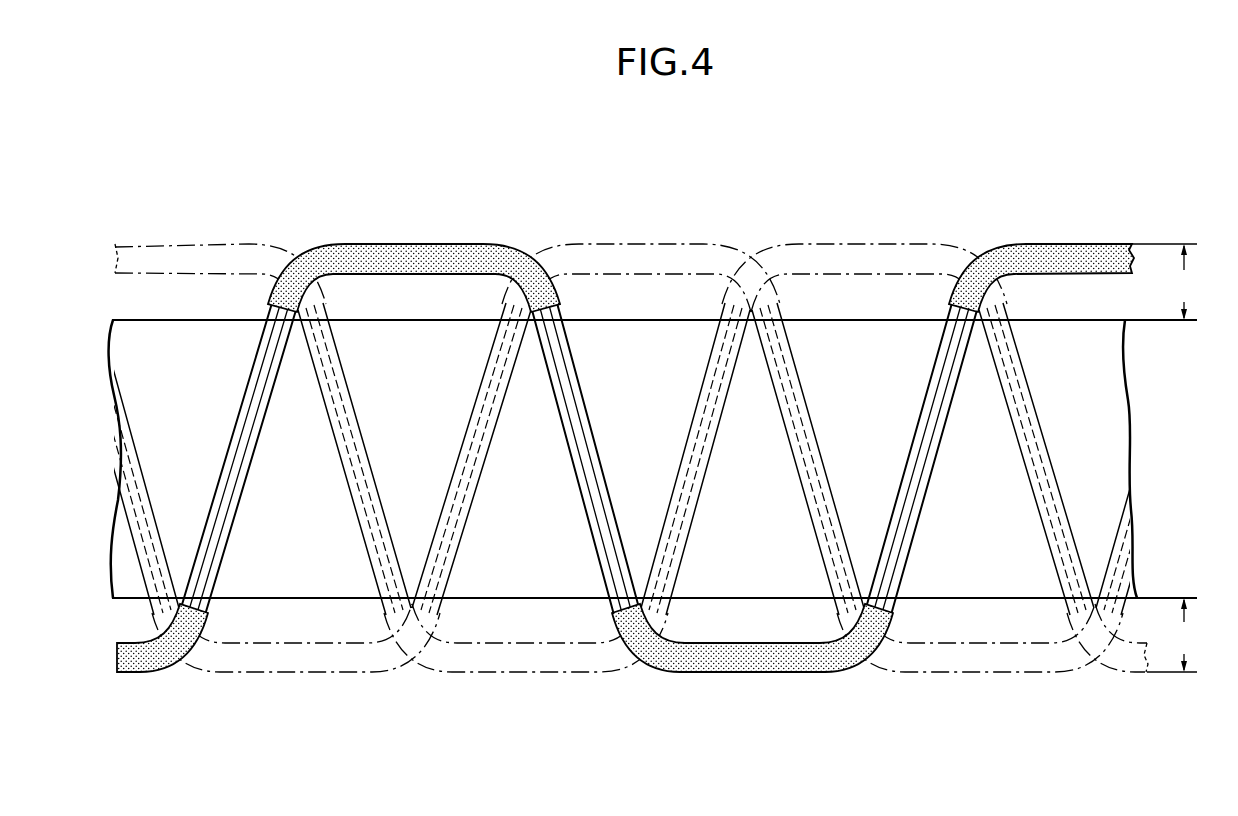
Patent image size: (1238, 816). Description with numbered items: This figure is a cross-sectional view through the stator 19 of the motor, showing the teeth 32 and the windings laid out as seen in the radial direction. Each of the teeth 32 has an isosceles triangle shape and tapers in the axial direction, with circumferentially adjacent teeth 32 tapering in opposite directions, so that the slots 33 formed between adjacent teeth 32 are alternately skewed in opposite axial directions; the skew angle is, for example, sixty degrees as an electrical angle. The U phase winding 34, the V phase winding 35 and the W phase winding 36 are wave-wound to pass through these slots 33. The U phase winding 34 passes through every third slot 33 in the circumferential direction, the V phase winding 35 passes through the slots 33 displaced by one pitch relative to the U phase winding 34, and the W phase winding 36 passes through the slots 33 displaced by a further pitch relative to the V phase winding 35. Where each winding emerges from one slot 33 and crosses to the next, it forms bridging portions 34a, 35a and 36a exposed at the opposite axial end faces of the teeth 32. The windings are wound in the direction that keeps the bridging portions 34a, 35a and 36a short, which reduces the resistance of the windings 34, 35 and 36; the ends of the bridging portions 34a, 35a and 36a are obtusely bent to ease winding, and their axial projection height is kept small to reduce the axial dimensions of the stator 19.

The stator 19 is at (734, 198).
The teeth 32 is at (995, 519).
The slots 33 is at (257, 405).
The U phase winding 34 is at (444, 238).
The bridging portions of the U phase winding 34a is at (387, 248).
The V phase winding 35 is at (657, 240).
The bridging portions of the V phase winding 35a is at (602, 253).
The W phase winding 36 is at (882, 240).
The bridging portions of the W phase winding 36a is at (197, 247).